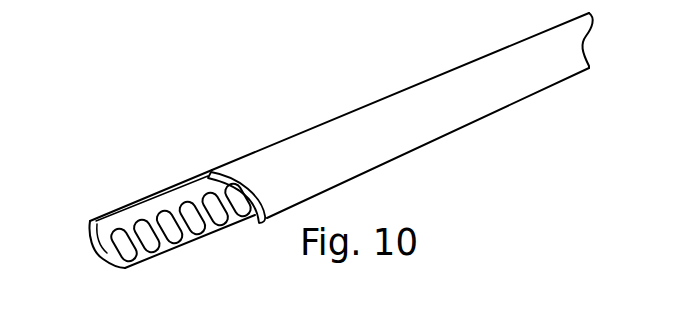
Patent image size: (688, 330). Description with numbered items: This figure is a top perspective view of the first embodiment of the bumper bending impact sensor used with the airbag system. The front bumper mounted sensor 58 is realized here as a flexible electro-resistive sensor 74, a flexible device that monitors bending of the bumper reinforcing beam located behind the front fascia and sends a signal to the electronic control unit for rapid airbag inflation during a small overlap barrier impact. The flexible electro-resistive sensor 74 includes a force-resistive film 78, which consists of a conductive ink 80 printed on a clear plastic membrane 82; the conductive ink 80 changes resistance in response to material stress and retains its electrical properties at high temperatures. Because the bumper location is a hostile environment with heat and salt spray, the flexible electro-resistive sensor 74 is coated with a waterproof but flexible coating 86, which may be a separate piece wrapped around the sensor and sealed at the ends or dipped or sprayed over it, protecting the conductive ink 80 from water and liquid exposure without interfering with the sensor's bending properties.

The front bumper mounted sensor 58 is at (483, 100).
The flexible electro-resistive sensor 74 is at (375, 150).
The force-resistive film 78 is at (158, 181).
The conductive ink 80 is at (145, 243).
The clear plastic membrane 82 is at (122, 221).
The coating 86 is at (266, 175).